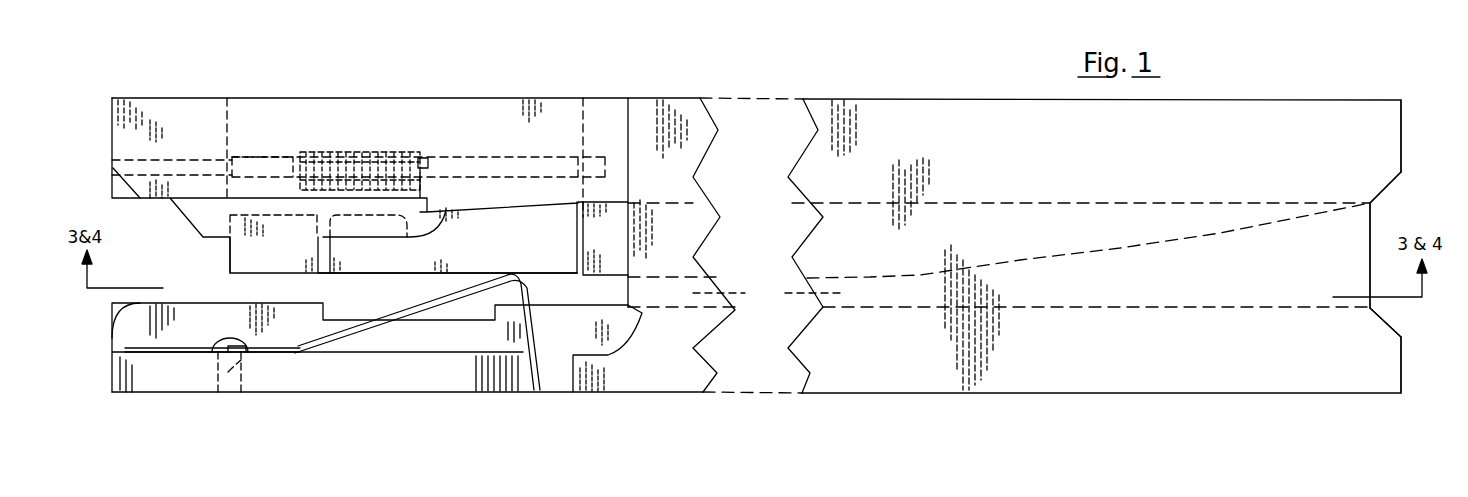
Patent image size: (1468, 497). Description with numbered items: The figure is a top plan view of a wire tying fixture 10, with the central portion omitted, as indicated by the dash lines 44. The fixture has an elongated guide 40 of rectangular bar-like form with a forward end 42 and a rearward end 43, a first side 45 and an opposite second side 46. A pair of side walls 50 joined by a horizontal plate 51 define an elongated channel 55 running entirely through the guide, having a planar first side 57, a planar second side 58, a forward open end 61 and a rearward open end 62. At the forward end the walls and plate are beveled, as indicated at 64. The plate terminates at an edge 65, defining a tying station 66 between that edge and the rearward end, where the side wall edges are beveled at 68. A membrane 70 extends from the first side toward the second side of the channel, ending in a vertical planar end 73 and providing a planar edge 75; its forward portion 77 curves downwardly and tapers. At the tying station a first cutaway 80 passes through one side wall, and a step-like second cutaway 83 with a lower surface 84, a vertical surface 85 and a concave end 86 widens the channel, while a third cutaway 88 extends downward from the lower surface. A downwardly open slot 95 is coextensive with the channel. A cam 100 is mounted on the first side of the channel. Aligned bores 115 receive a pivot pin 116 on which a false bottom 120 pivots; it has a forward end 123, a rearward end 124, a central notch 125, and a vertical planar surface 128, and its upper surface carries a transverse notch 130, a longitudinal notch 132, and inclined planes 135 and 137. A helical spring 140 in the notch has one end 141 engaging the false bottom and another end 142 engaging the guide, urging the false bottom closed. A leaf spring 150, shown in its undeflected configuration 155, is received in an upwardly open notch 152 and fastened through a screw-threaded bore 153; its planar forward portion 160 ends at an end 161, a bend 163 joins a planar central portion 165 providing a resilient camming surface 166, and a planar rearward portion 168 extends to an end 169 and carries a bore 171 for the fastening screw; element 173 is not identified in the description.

The wire tying fixture 10 is at (1330, 84).
The elongated guide 40 is at (1404, 110).
The forward end 42 is at (1402, 368).
The rearward end 43 is at (116, 120).
The dash lines 44 is at (766, 98).
The first side 45 is at (960, 99).
The second side 46 is at (1030, 394).
The side walls 50 is at (1276, 172).
The horizontal plate 51 is at (1260, 280).
The elongated channel 55 is at (798, 230).
The first side of channel 57 is at (1000, 204).
The second side of channel 58 is at (1055, 305).
The forward open end 61 is at (1376, 222).
The rearward open end 62 is at (110, 212).
The bevel 64 is at (1392, 184).
The edge 65 is at (622, 214).
The tying station 66 is at (400, 156).
The bevel 68 is at (133, 198).
The membrane 70 is at (1068, 232).
The vertical planar end 73 is at (582, 266).
The planar edge 75 is at (852, 277).
The forward portion 77 is at (1195, 232).
The first cutaway 80 is at (583, 143).
The second cutaway 83 is at (122, 340).
The lower surface 84 is at (488, 345).
The vertical surface 85 is at (422, 360).
The concave end 86 is at (630, 340).
The third cutaway 88 is at (332, 318).
The downwardly open slot 95 is at (95, 308).
The cam 100 is at (210, 216).
The horizontal bores 115 is at (137, 143).
The pivot pin 116 is at (118, 167).
The false bottom 120 is at (242, 267).
The forward end 123 is at (578, 236).
The rearward end 124 is at (230, 252).
The central notch 125 is at (310, 152).
The vertical planar surface 128 is at (470, 278).
The transverse notch 130 is at (340, 274).
The longitudinal notch 132 is at (392, 246).
The inclined plane 135 is at (512, 259).
The inclined plane 137 is at (252, 268).
The helical spring 140 is at (350, 150).
The spring end 141 is at (300, 180).
The spring end 142 is at (438, 205).
The leaf spring 150 is at (330, 355).
The upwardly open notch 152 is at (578, 382).
The screw-threaded bore 153 is at (217, 385).
The undeflected configuration 155 is at (462, 302).
The planar forward portion 160 is at (542, 338).
The end 161 is at (540, 382).
The bend 163 is at (530, 290).
The planar central portion 165 is at (362, 320).
The camming surface 166 is at (440, 308).
The planar rearward portion 168 is at (178, 350).
The end 169 is at (122, 353).
The bore 171 is at (242, 352).
The dome 173 is at (236, 340).